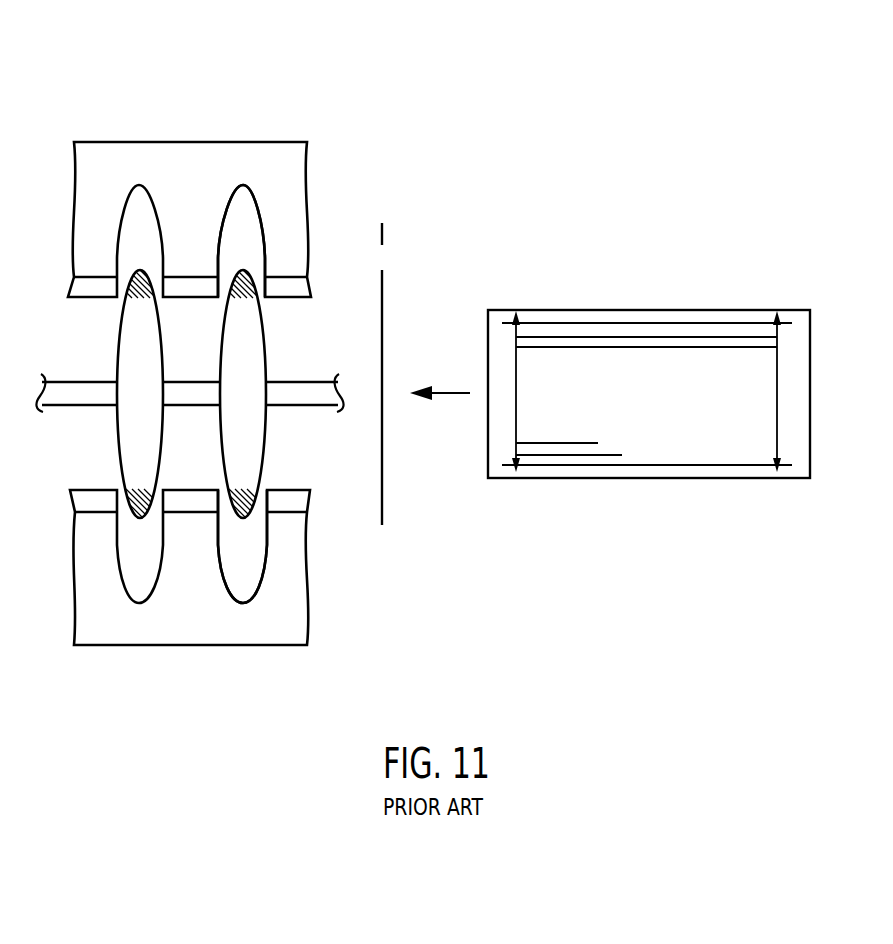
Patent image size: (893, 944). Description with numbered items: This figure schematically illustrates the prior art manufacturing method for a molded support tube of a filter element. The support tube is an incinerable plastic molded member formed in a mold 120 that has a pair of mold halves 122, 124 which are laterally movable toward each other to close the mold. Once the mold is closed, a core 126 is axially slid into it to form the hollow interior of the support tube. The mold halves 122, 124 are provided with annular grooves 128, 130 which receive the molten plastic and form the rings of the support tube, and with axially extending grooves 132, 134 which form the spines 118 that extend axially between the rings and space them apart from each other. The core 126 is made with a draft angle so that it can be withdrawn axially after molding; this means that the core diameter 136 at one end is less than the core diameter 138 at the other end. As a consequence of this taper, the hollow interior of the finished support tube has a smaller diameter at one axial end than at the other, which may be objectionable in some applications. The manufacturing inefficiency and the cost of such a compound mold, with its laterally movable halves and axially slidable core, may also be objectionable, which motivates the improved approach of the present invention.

The spines 118 is at (303, 406).
The mold 120 is at (128, 78).
The mold half 122 is at (307, 237).
The mold half 124 is at (308, 570).
The core 126 is at (611, 310).
The annular groove 128 is at (243, 188).
The annular groove 130 is at (238, 596).
The axially extending groove 132 is at (284, 279).
The axially extending groove 134 is at (283, 510).
The core diameter 136 is at (517, 381).
The core diameter 138 is at (776, 393).